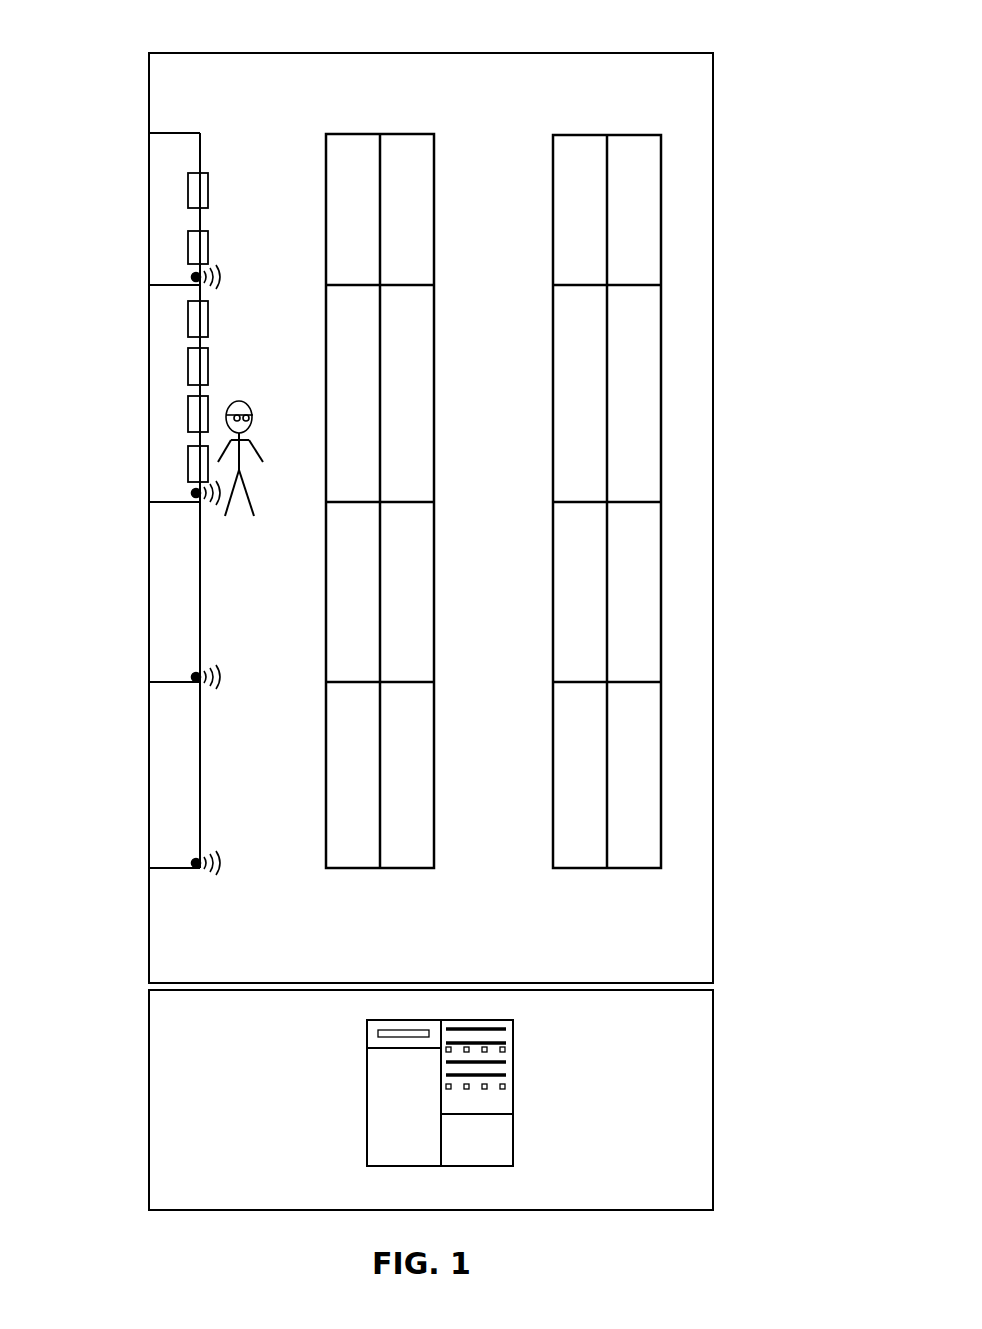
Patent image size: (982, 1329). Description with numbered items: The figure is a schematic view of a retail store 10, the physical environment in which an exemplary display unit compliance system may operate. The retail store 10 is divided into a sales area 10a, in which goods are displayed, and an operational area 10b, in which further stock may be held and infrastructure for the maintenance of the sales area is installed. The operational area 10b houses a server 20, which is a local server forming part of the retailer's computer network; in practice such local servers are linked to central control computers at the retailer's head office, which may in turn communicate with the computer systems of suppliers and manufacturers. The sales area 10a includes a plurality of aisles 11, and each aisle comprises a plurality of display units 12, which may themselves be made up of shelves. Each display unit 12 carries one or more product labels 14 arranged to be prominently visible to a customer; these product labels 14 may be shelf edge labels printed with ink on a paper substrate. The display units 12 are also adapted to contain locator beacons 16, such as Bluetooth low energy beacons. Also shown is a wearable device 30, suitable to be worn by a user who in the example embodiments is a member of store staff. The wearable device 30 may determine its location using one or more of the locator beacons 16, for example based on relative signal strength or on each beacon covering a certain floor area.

The retail store 10 is at (755, 89).
The sales area 10a is at (171, 947).
The operational area 10b is at (171, 1130).
The aisle 11 is at (285, 132).
The display unit 12 is at (155, 255).
The product label 14 is at (204, 198).
The locator beacon 16 is at (221, 272).
The server 20 is at (514, 1069).
The wearable device 30 is at (250, 413).